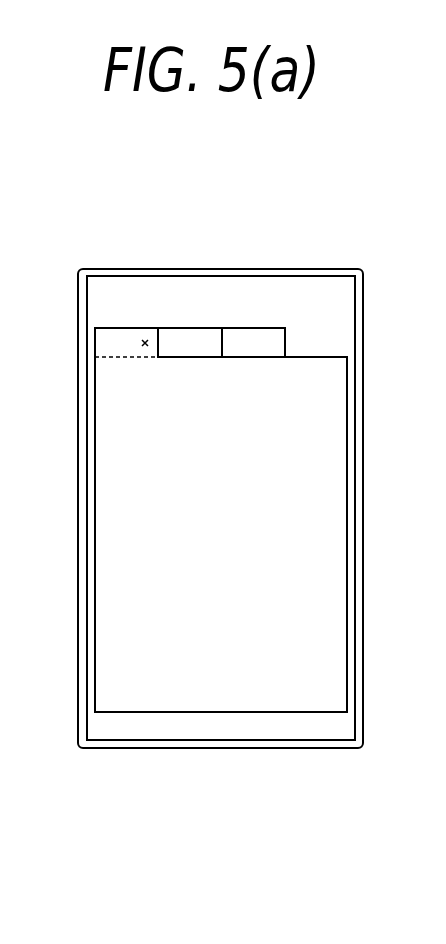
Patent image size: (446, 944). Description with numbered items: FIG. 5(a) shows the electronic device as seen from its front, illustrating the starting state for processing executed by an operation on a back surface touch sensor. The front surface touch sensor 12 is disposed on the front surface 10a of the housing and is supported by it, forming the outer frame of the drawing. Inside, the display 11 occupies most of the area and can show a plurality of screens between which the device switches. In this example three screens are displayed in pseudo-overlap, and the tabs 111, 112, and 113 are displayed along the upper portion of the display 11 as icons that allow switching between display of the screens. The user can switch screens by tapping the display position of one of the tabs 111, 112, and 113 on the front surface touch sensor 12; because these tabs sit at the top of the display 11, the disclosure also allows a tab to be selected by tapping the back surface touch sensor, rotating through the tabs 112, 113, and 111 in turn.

The front surface 10a is at (248, 269).
The display 11 is at (315, 513).
The front surface touch sensor 12 is at (330, 303).
The tab 111 is at (125, 328).
The tab 112 is at (188, 328).
The tab 113 is at (254, 328).